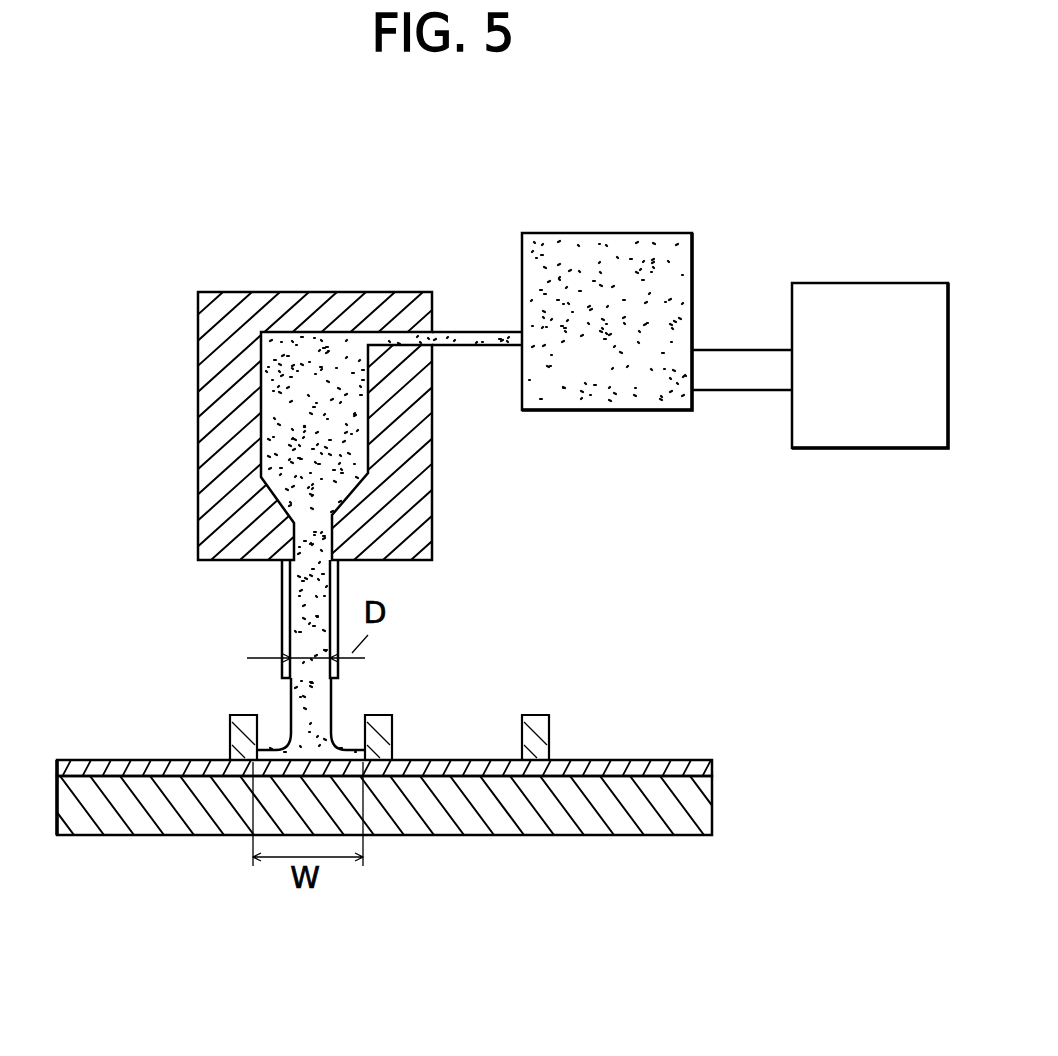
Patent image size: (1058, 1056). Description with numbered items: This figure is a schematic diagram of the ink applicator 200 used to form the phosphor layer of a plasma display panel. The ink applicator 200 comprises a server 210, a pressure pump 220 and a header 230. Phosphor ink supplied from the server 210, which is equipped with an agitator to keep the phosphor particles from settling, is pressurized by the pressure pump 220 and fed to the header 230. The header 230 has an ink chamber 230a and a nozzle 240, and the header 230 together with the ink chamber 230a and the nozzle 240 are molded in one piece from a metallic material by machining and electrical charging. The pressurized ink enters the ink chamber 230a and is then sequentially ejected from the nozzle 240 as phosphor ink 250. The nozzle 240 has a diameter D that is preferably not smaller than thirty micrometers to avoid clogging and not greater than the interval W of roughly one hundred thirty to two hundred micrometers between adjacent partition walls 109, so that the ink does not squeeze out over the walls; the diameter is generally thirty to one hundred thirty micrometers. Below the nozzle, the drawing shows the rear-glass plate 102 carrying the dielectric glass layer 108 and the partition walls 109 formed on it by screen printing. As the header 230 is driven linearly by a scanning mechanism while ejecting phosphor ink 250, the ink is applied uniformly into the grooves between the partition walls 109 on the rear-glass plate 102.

The ink applicator 200 is at (474, 427).
The server 210 is at (872, 450).
The pressure pump 220 is at (613, 413).
The header 230 is at (432, 532).
The ink chamber 230a is at (273, 412).
The nozzle 240 is at (280, 628).
The phosphor ink 250 is at (328, 722).
The partition wall 109 is at (523, 717).
The dielectric glass layer 108 is at (713, 772).
The rear-glass plate 102 is at (713, 805).